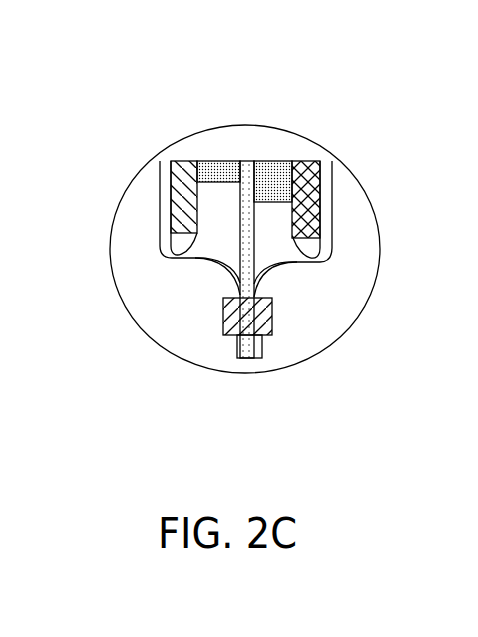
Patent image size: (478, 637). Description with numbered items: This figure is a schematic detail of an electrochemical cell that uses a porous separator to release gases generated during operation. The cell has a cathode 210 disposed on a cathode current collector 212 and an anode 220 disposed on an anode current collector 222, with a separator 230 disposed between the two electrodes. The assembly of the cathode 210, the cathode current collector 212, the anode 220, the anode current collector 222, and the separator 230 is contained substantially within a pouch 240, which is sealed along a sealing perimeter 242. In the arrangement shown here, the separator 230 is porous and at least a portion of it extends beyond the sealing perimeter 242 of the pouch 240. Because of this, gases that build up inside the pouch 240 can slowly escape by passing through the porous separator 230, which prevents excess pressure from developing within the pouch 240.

The cathode 210 is at (236, 163).
The anode 220 is at (271, 163).
The pouch 240 is at (159, 247).
The anode current collector 222 is at (332, 250).
The cathode current collector 212 is at (200, 260).
The separator 230 is at (238, 245).
The sealing perimeter 242 is at (206, 345).